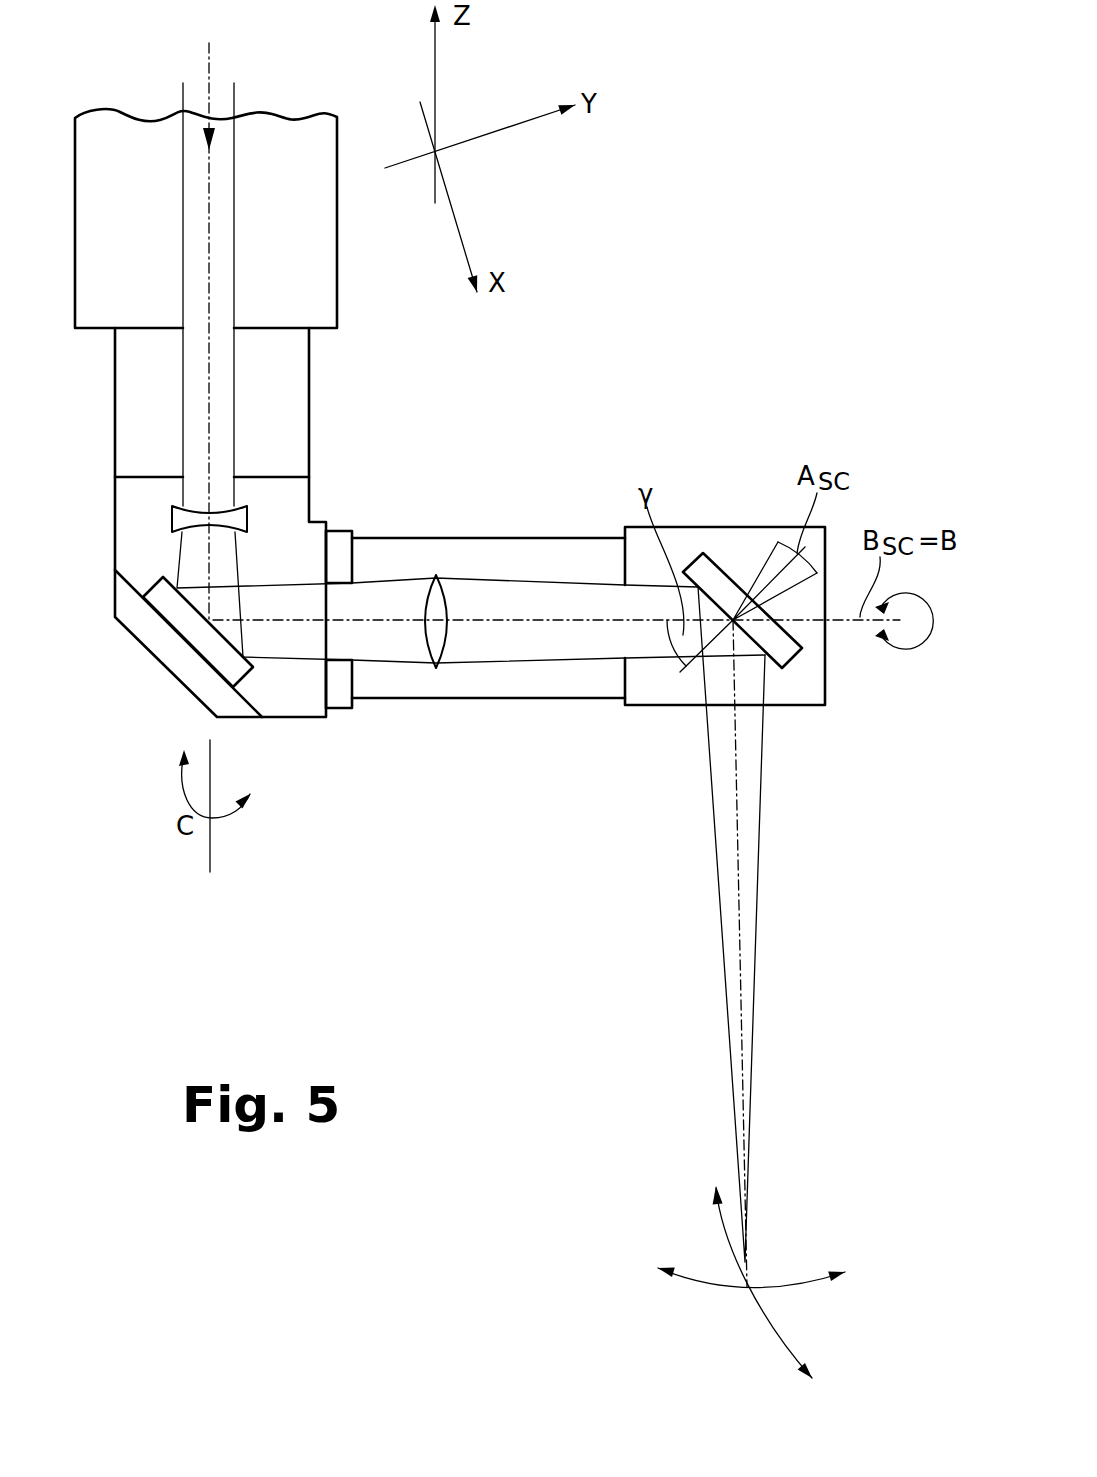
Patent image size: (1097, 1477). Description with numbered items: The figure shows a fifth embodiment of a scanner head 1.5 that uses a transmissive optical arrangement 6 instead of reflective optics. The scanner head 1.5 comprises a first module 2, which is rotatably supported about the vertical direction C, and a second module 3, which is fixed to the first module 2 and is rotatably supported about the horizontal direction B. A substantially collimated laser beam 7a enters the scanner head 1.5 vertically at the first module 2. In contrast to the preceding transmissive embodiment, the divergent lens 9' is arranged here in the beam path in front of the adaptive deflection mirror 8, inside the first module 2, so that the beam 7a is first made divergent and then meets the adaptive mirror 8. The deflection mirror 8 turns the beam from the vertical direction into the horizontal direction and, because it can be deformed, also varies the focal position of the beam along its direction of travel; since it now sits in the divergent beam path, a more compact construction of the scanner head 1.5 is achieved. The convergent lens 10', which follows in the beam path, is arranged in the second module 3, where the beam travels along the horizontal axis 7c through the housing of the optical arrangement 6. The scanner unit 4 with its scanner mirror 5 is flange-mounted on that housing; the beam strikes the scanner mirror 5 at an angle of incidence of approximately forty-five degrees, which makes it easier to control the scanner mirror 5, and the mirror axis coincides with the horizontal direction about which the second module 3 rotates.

The scanner head 1.5 is at (597, 320).
The first module 2 is at (113, 535).
The second module 3 is at (475, 668).
The scanner unit 4 is at (722, 527).
The scanner mirror 5 is at (790, 652).
The optical arrangement 6 is at (462, 537).
The laser beam 7a is at (208, 393).
The beam axis section 7c is at (585, 618).
The adaptive deflection mirror 8 is at (172, 602).
The divergent lens 9' is at (263, 501).
The convergent lens 10' is at (425, 677).